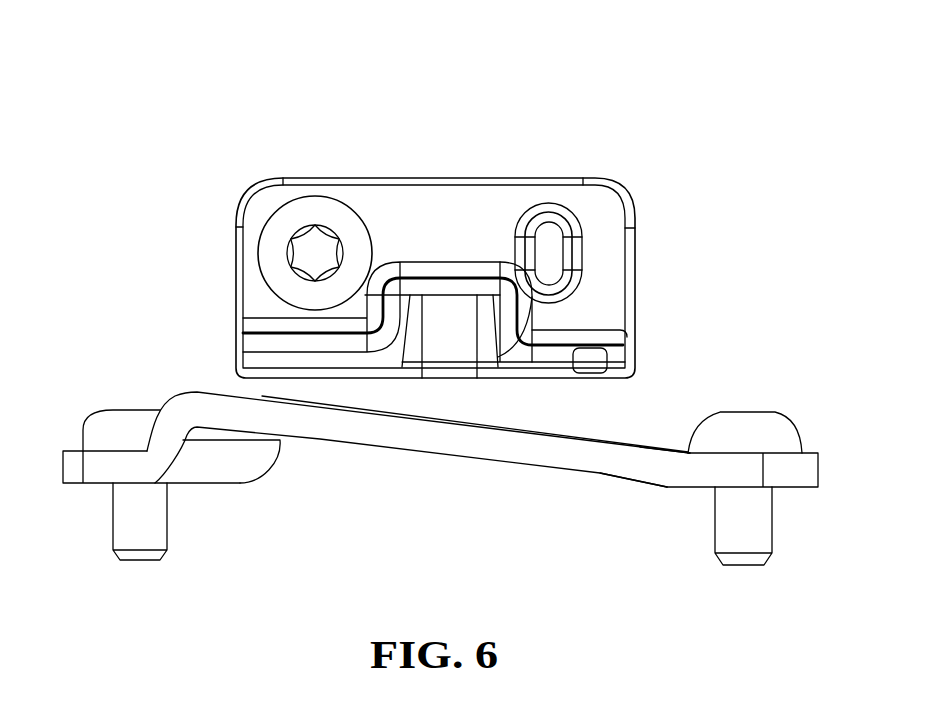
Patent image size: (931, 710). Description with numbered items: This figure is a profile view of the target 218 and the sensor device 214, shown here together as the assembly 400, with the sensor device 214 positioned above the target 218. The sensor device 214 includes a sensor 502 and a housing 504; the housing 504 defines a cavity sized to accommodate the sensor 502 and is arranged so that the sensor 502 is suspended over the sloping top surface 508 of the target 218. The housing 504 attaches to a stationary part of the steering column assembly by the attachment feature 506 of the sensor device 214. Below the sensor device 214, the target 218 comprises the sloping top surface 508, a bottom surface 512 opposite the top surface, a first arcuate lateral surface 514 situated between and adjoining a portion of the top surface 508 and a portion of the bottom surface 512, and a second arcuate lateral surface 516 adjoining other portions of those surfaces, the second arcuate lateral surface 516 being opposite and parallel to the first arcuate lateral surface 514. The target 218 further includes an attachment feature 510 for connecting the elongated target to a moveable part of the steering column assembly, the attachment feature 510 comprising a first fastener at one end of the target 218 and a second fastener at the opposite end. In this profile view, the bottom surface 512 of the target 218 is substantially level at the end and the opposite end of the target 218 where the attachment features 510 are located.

The bracket assembly 400 is at (178, 113).
The housing 504 is at (473, 198).
The attachment feature 506 is at (346, 218).
The sensor device 214 is at (578, 278).
The second arcuate lateral surface 516 is at (195, 361).
The sensor 502 is at (460, 372).
The bottom surface 512 is at (290, 496).
The sloping top surface 508 is at (622, 438).
The target 218 is at (665, 457).
The attachment feature 510 is at (753, 425).
The first arcuate lateral surface 514 is at (752, 478).